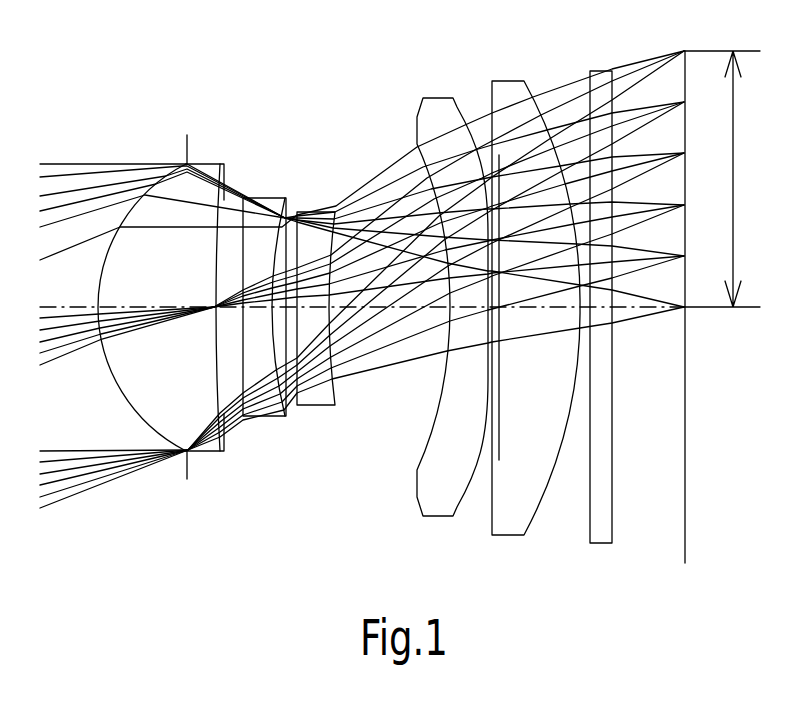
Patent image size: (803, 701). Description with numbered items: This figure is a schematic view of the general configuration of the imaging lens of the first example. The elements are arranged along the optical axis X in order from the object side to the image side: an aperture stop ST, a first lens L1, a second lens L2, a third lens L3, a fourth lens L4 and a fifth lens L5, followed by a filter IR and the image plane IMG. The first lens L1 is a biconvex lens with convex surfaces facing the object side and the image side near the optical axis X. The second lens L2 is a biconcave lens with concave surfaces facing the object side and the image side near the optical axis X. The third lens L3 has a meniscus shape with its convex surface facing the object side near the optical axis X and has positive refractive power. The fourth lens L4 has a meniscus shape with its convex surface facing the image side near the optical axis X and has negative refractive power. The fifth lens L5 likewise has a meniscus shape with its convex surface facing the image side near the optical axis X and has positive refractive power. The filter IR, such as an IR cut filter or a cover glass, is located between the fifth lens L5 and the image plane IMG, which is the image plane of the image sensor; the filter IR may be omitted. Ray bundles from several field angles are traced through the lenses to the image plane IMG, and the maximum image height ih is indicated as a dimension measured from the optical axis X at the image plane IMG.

The optical axis X is at (97, 305).
The aperture stop ST is at (186, 160).
The first lens L1 is at (220, 163).
The second lens L2 is at (268, 196).
The third lens L3 is at (316, 211).
The fourth lens L4 is at (437, 97).
The fifth lens L5 is at (512, 80).
The filter IR is at (598, 70).
The image plane IMG is at (685, 503).
The maximum image height ih is at (722, 179).